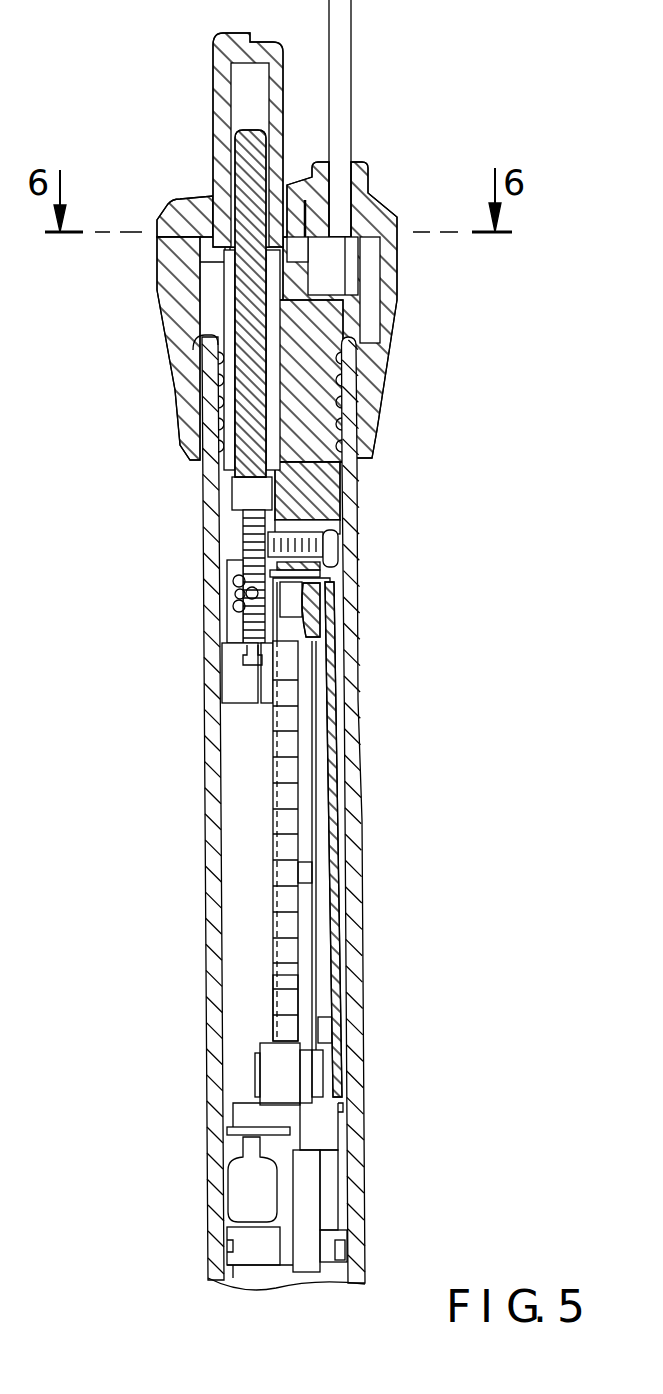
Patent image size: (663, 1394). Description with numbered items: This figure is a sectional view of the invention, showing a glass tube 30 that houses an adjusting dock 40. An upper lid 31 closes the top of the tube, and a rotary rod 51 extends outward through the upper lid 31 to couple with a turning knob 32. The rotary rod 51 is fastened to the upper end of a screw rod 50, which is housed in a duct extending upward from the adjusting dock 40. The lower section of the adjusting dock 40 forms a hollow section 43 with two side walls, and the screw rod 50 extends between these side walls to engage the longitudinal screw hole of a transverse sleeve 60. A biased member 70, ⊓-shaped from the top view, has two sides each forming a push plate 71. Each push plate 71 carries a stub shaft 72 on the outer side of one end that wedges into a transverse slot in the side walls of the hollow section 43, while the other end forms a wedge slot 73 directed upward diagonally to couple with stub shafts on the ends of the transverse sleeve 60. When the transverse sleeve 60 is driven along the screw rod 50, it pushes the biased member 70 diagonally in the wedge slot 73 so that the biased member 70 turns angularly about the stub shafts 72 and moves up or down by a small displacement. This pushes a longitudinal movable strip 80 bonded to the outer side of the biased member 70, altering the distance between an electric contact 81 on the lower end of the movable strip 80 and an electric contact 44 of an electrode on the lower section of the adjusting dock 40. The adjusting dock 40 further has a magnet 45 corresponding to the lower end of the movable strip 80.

The glass tube 30 is at (350, 498).
The upper lid 31 is at (372, 213).
The turning knob 32 is at (232, 52).
The adjusting dock 40 is at (285, 843).
The hollow section 43 is at (238, 690).
The electric contact 44 is at (300, 1033).
The magnet 45 is at (307, 1085).
The screw rod 50 is at (248, 545).
The rotary rod 51 is at (247, 155).
The transverse sleeve 60 is at (277, 580).
The biased member 70 is at (308, 610).
The push plate 71 is at (283, 603).
The stub shaft 72 is at (313, 598).
The wedge slot 73 is at (233, 593).
The movable strip 80 is at (332, 875).
The electric contact 81 is at (325, 1028).